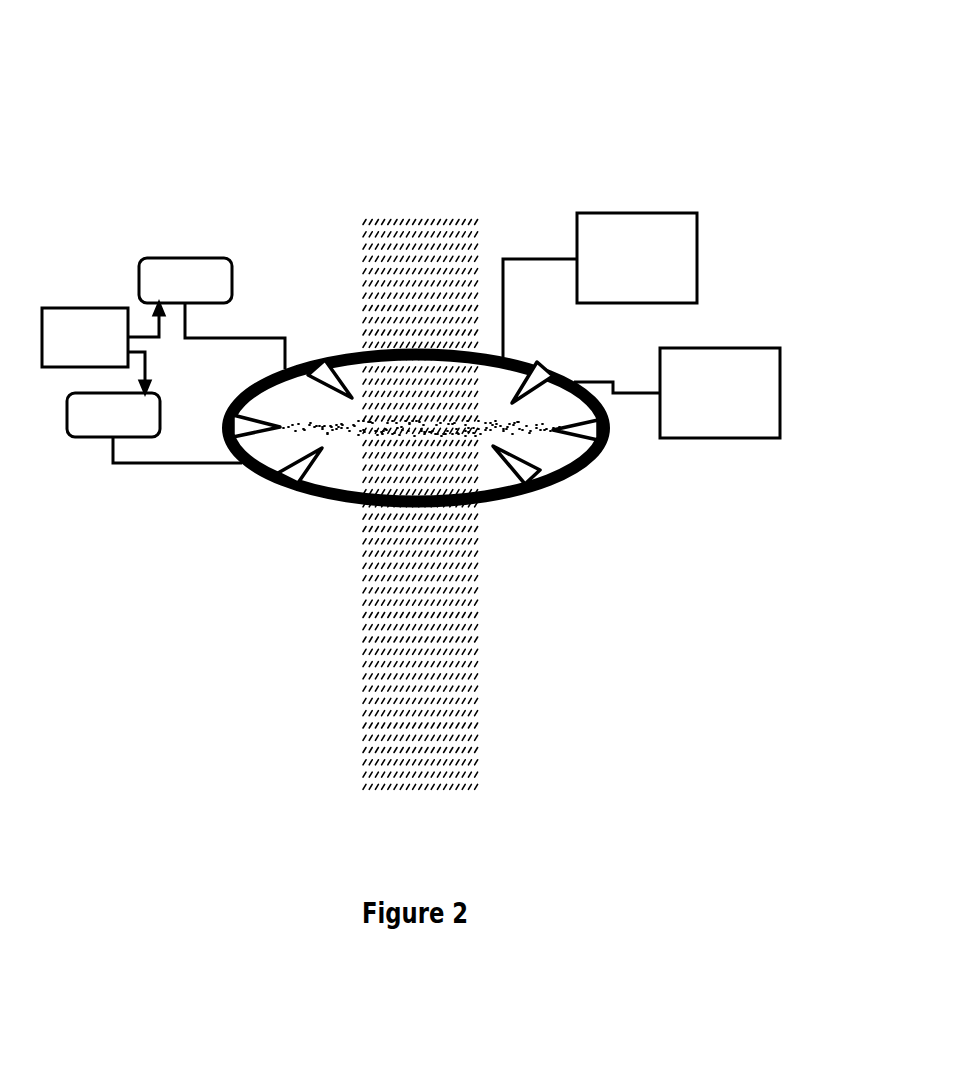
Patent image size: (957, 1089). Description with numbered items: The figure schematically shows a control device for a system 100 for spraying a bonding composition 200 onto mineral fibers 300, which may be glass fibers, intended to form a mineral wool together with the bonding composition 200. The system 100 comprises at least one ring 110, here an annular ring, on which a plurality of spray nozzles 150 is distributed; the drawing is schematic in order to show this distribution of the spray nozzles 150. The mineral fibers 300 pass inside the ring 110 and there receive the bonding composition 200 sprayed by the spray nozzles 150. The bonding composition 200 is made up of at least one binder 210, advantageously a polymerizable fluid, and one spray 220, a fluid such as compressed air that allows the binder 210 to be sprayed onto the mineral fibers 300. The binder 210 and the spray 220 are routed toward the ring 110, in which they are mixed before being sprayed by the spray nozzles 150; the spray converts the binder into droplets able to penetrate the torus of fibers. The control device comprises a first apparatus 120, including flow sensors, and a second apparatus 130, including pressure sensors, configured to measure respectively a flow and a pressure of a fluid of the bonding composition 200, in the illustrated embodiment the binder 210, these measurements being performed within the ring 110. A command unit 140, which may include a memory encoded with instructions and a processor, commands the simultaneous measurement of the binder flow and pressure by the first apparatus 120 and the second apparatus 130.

The spraying system 100 is at (537, 145).
The ring 110 is at (325, 502).
The first apparatus 120 is at (162, 275).
The second apparatus 130 is at (87, 415).
The command unit 140 is at (85, 337).
The spray nozzles 150 is at (328, 363).
The bonding composition 200 is at (492, 430).
The binder 210 is at (637, 248).
The spray 220 is at (737, 410).
The mineral fibers 300 is at (407, 235).